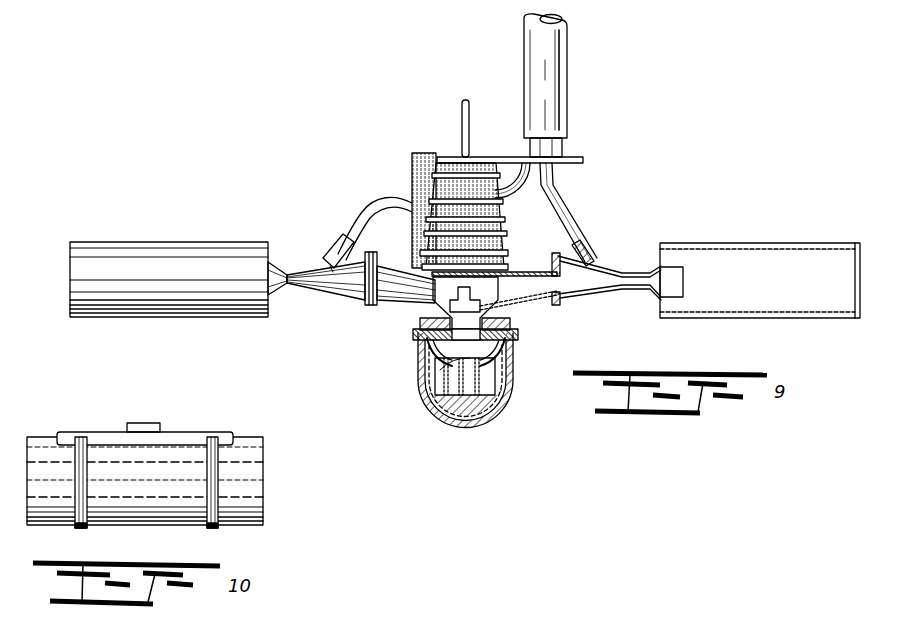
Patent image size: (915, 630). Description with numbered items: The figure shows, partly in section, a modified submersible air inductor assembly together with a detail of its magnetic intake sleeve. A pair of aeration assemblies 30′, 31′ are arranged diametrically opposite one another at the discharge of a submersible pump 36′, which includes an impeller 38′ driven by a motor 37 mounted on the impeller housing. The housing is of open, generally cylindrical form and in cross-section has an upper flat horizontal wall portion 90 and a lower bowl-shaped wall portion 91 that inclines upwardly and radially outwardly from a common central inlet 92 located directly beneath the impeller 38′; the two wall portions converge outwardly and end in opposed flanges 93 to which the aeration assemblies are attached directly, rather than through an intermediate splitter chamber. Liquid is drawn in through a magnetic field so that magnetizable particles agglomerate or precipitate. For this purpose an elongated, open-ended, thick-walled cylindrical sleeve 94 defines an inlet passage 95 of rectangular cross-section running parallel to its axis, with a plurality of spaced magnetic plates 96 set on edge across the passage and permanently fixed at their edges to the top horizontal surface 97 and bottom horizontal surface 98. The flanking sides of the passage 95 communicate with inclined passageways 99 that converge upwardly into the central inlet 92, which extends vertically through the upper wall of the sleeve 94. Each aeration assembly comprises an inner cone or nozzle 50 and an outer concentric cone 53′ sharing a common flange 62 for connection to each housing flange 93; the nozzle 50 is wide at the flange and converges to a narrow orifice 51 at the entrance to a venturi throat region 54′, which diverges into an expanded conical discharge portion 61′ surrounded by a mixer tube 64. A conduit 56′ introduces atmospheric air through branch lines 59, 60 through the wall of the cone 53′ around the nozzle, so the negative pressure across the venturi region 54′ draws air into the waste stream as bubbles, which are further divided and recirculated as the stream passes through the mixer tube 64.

In FIG. 9, the aeration assembly 30′ is at (165, 236).
In FIG. 9, the aeration assembly 31′ is at (621, 244).
In FIG. 9, the submersible pump 36′ is at (412, 157).
In FIG. 9, the motor 37 is at (438, 196).
In FIG. 9, the impeller 38′ is at (488, 292).
In FIG. 9, the nozzle 50 is at (598, 285).
In FIG. 9, the orifice 51 is at (645, 262).
In FIG. 9, the outer cone 53′ is at (609, 262).
In FIG. 9, the venturi throat region 54′ is at (657, 262).
In FIG. 9, the conduit 56′ is at (568, 70).
In FIG. 9, the branch line 59 is at (360, 213).
In FIG. 9, the branch line 60 is at (557, 180).
In FIG. 9, the conical discharge portion 61′ is at (673, 300).
In FIG. 9, the common flange 62 is at (363, 305).
In FIG. 9, the mixer tube 64 is at (740, 243).
In FIG. 9, the upper flat horizontal wall portion 90 is at (523, 268).
In FIG. 9, the lower bowl-shaped wall portion 91 is at (554, 300).
In FIG. 9, the central inlet 92 is at (483, 330).
In FIG. 9, the flange 93 is at (370, 252).
In FIG. 9, the inlet sleeve 94 is at (515, 401).
In FIG. 10, the inlet sleeve 94 is at (265, 528).
In FIG. 9, the inlet passage 95 is at (495, 376).
In FIG. 10, the inlet passage 95 is at (235, 500).
In FIG. 9, the magnetic plates 96 is at (440, 405).
In FIG. 9, the top horizontal surface 97 is at (426, 366).
In FIG. 9, the bottom horizontal surface 98 is at (493, 405).
In FIG. 9, the inclined passageways 99 is at (445, 348).
In FIG. 10, the inclined passageways 99 is at (160, 458).